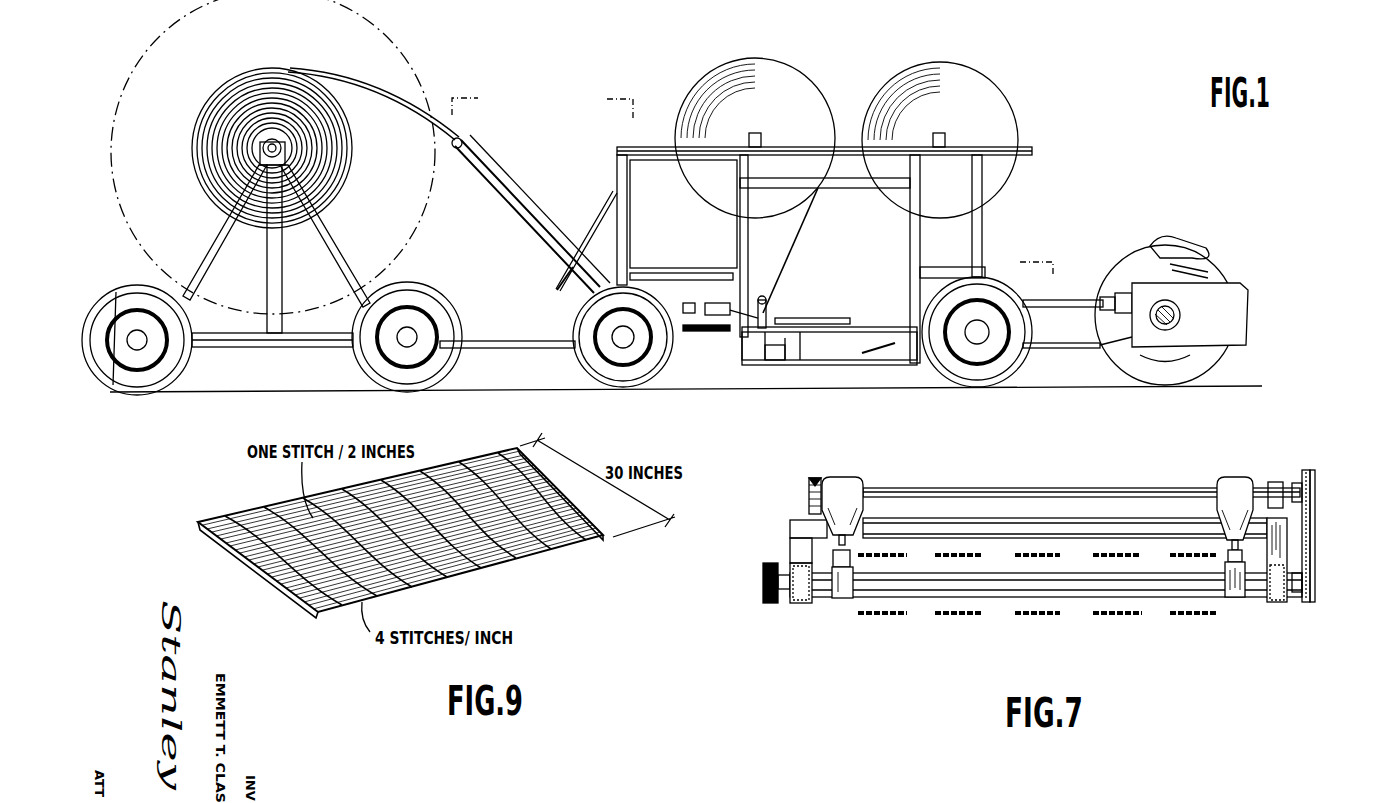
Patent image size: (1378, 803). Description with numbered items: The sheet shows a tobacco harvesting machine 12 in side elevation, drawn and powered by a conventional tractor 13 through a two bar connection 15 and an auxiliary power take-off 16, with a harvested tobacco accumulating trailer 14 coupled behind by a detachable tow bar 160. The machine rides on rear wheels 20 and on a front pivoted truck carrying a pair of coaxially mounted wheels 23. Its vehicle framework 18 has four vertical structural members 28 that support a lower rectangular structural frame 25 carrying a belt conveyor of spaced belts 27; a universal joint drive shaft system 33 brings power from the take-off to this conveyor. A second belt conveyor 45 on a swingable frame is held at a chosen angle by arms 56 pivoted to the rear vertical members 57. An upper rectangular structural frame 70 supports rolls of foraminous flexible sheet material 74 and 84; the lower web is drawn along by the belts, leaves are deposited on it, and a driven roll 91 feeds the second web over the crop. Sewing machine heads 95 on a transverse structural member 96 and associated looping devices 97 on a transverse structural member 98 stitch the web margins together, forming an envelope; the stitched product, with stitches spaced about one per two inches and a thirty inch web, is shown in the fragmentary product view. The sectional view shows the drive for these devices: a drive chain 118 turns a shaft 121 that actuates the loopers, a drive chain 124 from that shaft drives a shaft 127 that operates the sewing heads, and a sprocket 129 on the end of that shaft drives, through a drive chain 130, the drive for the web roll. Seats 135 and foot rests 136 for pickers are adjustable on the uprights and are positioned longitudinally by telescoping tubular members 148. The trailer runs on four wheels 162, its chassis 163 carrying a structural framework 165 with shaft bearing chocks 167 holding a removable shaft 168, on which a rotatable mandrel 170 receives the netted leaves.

In FIG. 1, the harvesting machine 12 is at (1015, 201).
In FIG. 1, the tractor 13 is at (1245, 256).
In FIG. 1, the harvested tobacco accumulating trailer 14 is at (408, 253).
In FIG. 1, the two bar connection 15 is at (1115, 360).
In FIG. 1, the auxiliary power take-off 16 is at (1112, 298).
In FIG. 1, the vehicle framework 18 is at (669, 136).
In FIG. 1, the wheels 20 is at (652, 355).
In FIG. 1, the coaxially mounted wheels 23 is at (1003, 362).
In FIG. 1, the vertical structural members 28 is at (910, 235).
In FIG. 1, the universal joint drive shaft system 33 is at (1090, 281).
In FIG. 1, the second belt conveyor 45 is at (482, 196).
In FIG. 1, the arms 56 is at (603, 208).
In FIG. 1, the rear vertical members 57 is at (630, 220).
In FIG. 1, the rectangular structural frame 70 is at (845, 147).
In FIG. 1, the flexible sheet material 74 is at (960, 258).
In FIG. 9, the flexible sheet material 74 is at (262, 580).
In FIG. 1, the second roll of flexible sheet material 84 is at (792, 252).
In FIG. 9, the second roll of flexible sheet material 84 is at (242, 552).
In FIG. 1, the roll 91 is at (765, 313).
In FIG. 1, the seats 135 is at (797, 323).
In FIG. 1, the foot rests 136 is at (893, 347).
In FIG. 1, the telescoping tubular members 148 is at (870, 367).
In FIG. 1, the detachable tow bar 160 is at (535, 350).
In FIG. 1, the wheels 162 is at (360, 365).
In FIG. 1, the chassis 163 is at (287, 347).
In FIG. 1, the structural framework 165 is at (330, 262).
In FIG. 1, the shaft bearing chocks 167 is at (285, 153).
In FIG. 1, the shaft 168 is at (277, 137).
In FIG. 1, the mandrel 170 is at (255, 128).
In FIG. 7, the rectangular structural frame 25 is at (1278, 603).
In FIG. 7, the belts 27 is at (1102, 618).
In FIG. 7, the sewing machine heads 95 is at (1232, 478).
In FIG. 7, the transverse structural member 96 is at (990, 527).
In FIG. 7, the looping devices 97 is at (1233, 598).
In FIG. 7, the transverse structural member 98 is at (1083, 568).
In FIG. 7, the drive chain 118 is at (763, 563).
In FIG. 7, the shaft 121 is at (1155, 590).
In FIG. 7, the drive chain 124 is at (1313, 557).
In FIG. 7, the shaft 127 is at (1040, 490).
In FIG. 7, the sprocket 129 is at (808, 492).
In FIG. 7, the drive chain 130 is at (812, 478).